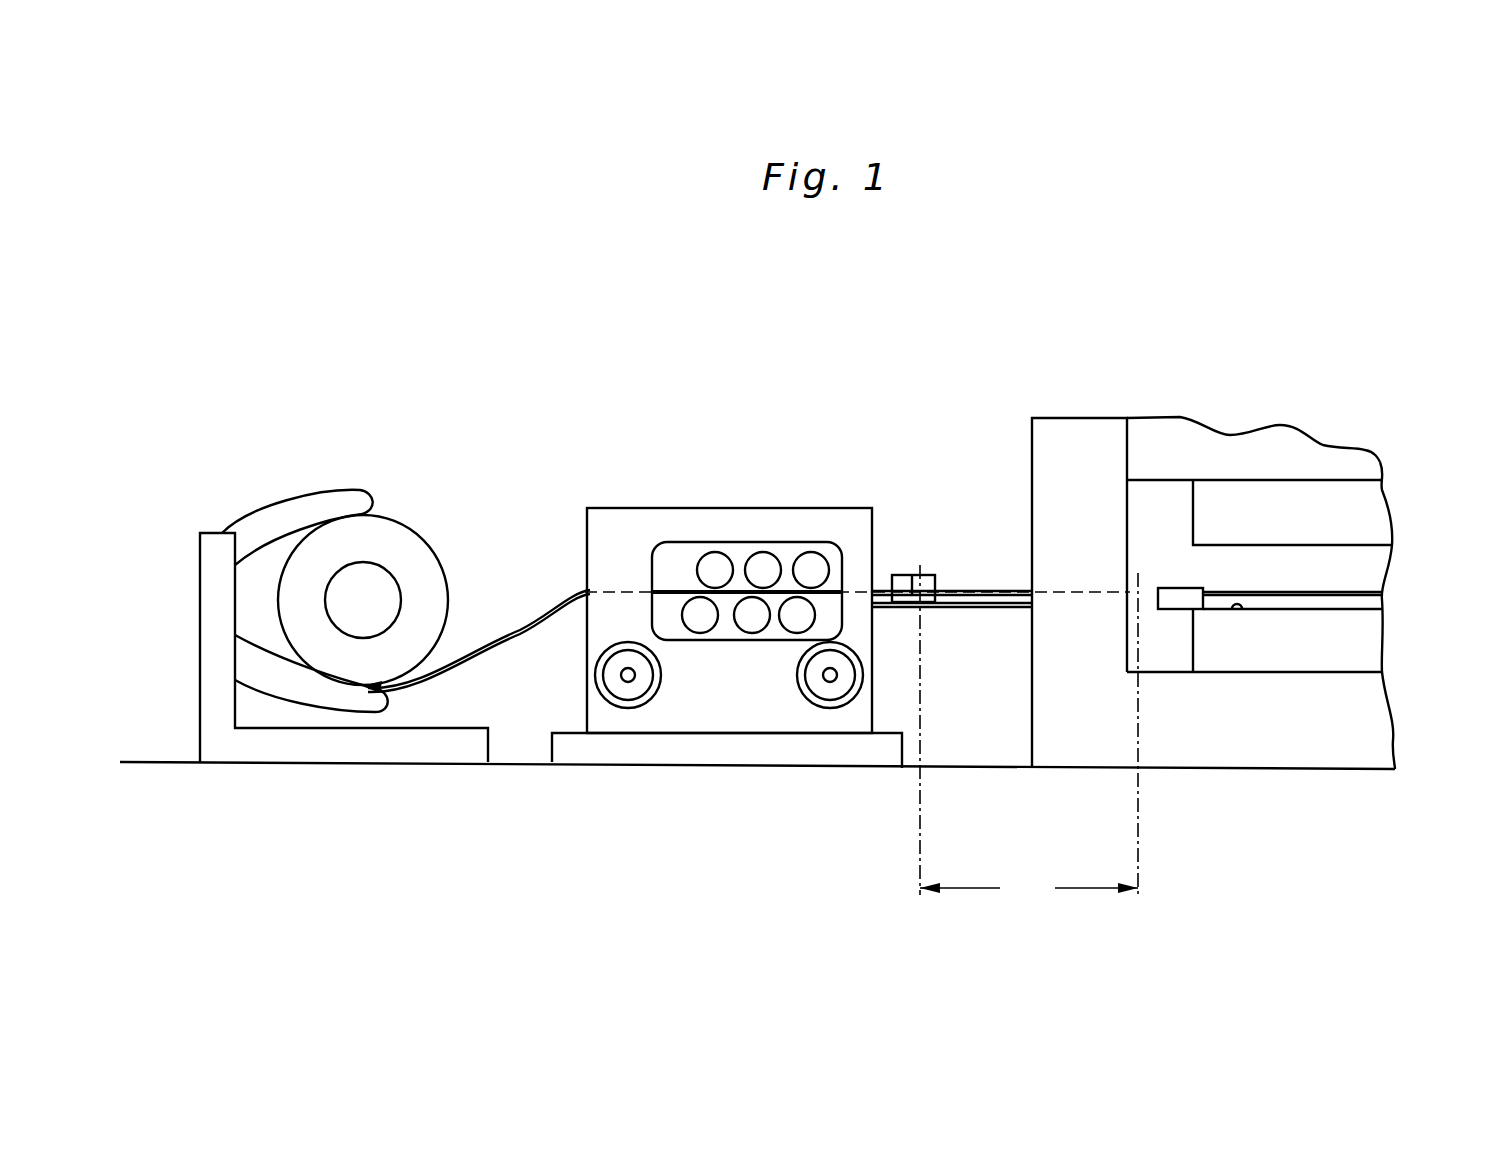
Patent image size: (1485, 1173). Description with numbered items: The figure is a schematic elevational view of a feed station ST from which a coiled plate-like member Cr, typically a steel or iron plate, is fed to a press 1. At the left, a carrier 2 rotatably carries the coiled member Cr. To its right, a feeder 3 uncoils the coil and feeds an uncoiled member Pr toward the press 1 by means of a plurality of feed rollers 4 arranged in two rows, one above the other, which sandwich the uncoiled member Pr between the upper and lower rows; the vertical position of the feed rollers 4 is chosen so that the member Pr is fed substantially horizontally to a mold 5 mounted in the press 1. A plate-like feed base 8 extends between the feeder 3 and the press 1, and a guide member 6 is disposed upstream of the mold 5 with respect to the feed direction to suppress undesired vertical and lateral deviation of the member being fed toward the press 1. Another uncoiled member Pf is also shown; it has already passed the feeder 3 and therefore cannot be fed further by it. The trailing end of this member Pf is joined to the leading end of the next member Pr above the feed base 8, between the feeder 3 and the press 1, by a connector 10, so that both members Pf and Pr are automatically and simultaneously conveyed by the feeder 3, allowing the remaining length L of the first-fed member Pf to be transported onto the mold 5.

The press 1 is at (1249, 535).
The carrier 2 is at (359, 545).
The feeder 3 is at (841, 620).
The feed rollers 4 is at (715, 558).
The mold 5 is at (1372, 638).
The guide member 6 is at (1180, 588).
The feed base 8 is at (972, 612).
The connector 10 is at (903, 575).
The coiled plate-like member Cr is at (412, 542).
The uncoiled member Pr is at (520, 630).
The uncoiled member Pf is at (985, 590).
The feed station ST is at (653, 383).
The remaining length L is at (1029, 737).